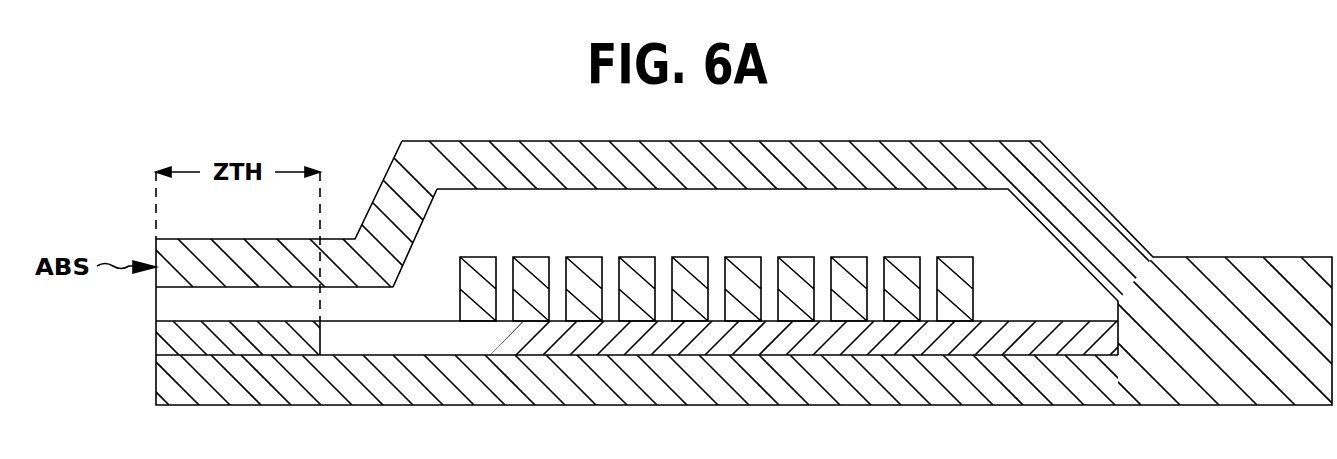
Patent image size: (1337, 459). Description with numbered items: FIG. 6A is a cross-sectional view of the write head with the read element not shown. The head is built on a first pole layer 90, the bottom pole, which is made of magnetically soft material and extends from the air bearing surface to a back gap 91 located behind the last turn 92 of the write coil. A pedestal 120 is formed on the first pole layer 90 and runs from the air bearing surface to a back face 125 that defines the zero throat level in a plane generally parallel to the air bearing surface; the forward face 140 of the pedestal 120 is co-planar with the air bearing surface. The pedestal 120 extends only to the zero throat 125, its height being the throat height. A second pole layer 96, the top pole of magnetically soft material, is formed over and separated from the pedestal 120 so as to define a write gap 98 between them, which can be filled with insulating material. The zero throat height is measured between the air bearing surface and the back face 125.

The first pole layer 90 is at (255, 397).
The back gap 91 is at (1058, 297).
The last turn 92 is at (958, 257).
The second pole layer 96 is at (297, 252).
The write gap 98 is at (167, 309).
The pedestal 120 is at (156, 330).
The forward face 140 is at (156, 352).
The back face 125 is at (320, 342).